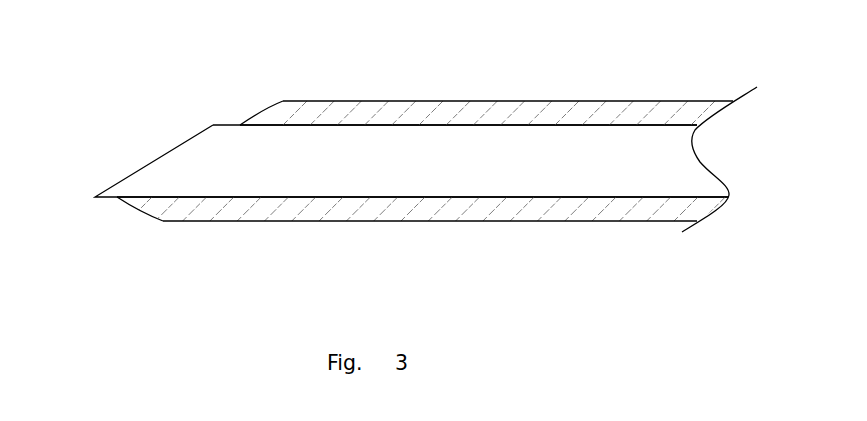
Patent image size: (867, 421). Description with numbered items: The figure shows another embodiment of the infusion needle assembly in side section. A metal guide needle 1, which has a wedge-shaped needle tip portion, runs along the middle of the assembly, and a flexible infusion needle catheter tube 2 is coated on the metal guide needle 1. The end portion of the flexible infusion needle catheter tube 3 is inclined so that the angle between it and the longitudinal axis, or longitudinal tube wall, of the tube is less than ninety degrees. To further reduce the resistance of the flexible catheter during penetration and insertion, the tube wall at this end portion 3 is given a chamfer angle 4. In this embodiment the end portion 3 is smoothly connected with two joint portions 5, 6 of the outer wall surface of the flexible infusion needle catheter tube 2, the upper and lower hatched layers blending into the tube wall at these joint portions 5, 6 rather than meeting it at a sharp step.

The metal guide needle 1 is at (653, 158).
The flexible infusion needle catheter tube 2 is at (608, 124).
The end portion of the flexible infusion needle catheter tube 3 is at (258, 113).
The chamfer angle 4 is at (143, 210).
The joint portion 5 is at (280, 103).
The joint portion 6 is at (163, 221).